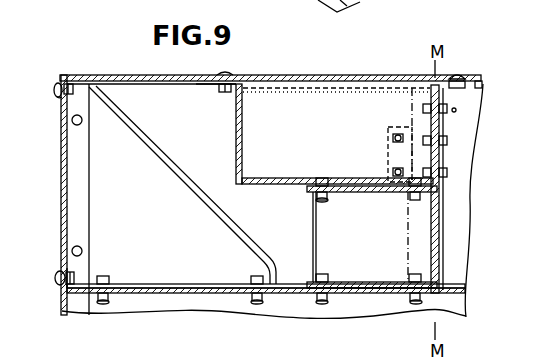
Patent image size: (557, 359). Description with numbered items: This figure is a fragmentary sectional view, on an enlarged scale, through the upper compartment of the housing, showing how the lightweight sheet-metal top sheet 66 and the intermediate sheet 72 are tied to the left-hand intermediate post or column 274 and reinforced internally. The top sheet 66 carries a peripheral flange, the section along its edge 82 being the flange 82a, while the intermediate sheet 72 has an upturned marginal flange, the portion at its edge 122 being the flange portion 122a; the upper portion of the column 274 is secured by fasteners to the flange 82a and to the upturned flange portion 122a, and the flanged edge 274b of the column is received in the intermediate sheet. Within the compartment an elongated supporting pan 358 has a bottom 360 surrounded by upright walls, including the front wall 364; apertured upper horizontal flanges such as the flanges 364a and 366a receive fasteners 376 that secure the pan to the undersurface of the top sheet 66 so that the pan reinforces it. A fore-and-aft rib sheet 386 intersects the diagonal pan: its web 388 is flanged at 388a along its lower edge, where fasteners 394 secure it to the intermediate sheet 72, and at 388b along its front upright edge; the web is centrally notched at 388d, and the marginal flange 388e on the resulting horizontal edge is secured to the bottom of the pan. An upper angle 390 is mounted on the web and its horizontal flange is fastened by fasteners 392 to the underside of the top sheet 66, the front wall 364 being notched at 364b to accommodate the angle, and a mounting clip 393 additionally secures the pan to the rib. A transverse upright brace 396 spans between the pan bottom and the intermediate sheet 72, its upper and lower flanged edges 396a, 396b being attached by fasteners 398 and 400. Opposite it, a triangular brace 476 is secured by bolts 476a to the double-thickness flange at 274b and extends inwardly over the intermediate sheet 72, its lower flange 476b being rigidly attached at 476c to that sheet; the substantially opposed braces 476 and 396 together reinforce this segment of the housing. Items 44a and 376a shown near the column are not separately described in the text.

The top sheet 66 is at (128, 79).
The intermediate sheet 72 is at (143, 294).
The edge 82 is at (61, 84).
The flange 82a is at (57, 96).
The edge 122 is at (55, 278).
The upturned flange portion 122a is at (74, 266).
The left-hand intermediate post or column 274 is at (61, 198).
The flanged edge 274b is at (77, 172).
The frame member 44a is at (13, 222).
The supporting pan 358 is at (233, 138).
The bottom 360 is at (280, 179).
The front wall 364 is at (295, 97).
The upper marginal horizontal flange 364a is at (345, 89).
The notch 364b is at (457, 112).
The upper marginal horizontal flange 366a is at (197, 86).
The fasteners 376 is at (227, 77).
The hole 376a is at (72, 119).
The rib sheet 386 is at (456, 233).
The web 388 is at (432, 100).
The lower marginal flange 388a is at (428, 294).
The front flange 388b is at (408, 250).
The notch 388d is at (436, 182).
The marginal flange 388e is at (441, 206).
The angle 390 is at (445, 128).
The fasteners 392 is at (457, 78).
The mounting clip 393 is at (398, 127).
The fasteners 394 is at (415, 303).
The transverse upright brace 396 is at (313, 218).
The upper flanged edge 396a is at (350, 186).
The lower flanged edge 396b is at (347, 290).
The fasteners 398 is at (323, 177).
The fasteners 400 is at (314, 302).
The triangular brace 476 is at (154, 209).
The bolts 476a is at (71, 252).
The lower flange 476b is at (192, 283).
The attachment 476c is at (104, 303).